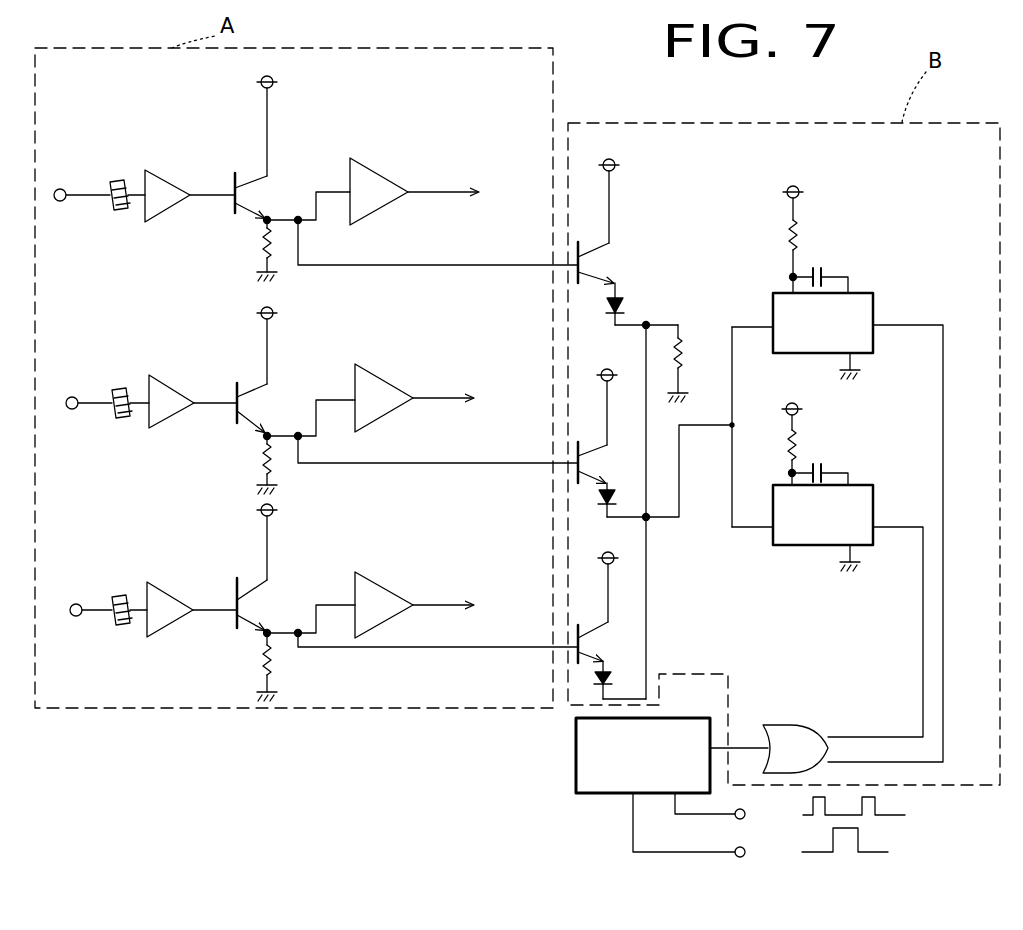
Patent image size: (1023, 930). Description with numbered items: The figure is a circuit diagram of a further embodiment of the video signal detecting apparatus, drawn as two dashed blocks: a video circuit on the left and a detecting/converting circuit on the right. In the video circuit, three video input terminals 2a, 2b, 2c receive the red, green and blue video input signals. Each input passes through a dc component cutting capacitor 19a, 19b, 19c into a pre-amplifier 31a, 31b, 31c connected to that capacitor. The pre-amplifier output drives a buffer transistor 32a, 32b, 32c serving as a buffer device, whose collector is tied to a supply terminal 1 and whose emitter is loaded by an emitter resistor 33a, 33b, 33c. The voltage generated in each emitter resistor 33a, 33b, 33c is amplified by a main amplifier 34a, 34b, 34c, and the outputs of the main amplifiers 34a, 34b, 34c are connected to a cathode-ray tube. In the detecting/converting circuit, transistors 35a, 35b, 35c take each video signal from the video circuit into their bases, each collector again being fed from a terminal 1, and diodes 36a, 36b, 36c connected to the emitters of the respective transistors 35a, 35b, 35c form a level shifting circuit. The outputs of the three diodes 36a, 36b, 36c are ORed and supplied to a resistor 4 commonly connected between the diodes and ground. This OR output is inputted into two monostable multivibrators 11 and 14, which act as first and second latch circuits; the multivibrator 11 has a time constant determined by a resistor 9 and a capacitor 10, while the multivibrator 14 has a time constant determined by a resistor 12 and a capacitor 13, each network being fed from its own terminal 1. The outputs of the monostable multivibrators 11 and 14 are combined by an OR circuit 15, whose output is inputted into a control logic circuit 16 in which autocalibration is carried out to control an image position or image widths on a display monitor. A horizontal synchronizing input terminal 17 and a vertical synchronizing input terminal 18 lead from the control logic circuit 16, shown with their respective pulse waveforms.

The power supply terminal 1 is at (275, 80).
The video input terminal 2a is at (63, 188).
The video input terminal 2b is at (71, 396).
The video input terminal 2c is at (73, 603).
The resistor 4 is at (686, 360).
The resistor 9 is at (800, 240).
The capacitor 10 is at (823, 268).
The monostable multivibrator 11 is at (873, 293).
The resistor 12 is at (800, 445).
The capacitor 13 is at (823, 464).
The monostable multivibrator 14 is at (873, 490).
The OR circuit 15 is at (812, 724).
The control logic circuit 16 is at (576, 750).
The horizontal synchronizing input terminal 17 is at (746, 815).
The vertical synchronizing input terminal 18 is at (746, 853).
The dc component cutting capacitor 19a is at (117, 179).
The dc component cutting capacitor 19b is at (122, 388).
The dc component cutting capacitor 19c is at (122, 595).
The pre-amplifier 31a is at (172, 172).
The pre-amplifier 31b is at (177, 384).
The pre-amplifier 31c is at (174, 590).
The buffer transistor 32a is at (252, 190).
The buffer transistor 32b is at (250, 400).
The buffer transistor 32c is at (250, 600).
The emitter resistor 33a is at (262, 244).
The emitter resistor 33b is at (262, 468).
The emitter resistor 33c is at (258, 664).
The main amplifier 34a is at (384, 170).
The main amplifier 34b is at (386, 376).
The main amplifier 34c is at (388, 582).
The transistor 35a is at (592, 262).
The transistor 35b is at (588, 464).
The transistor 35c is at (588, 646).
The diode 36a is at (622, 308).
The diode 36b is at (600, 506).
The diode 36c is at (612, 678).